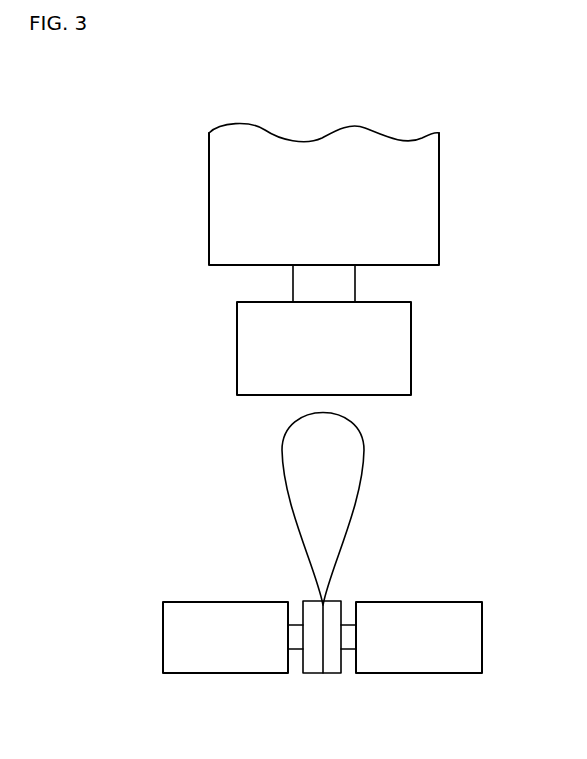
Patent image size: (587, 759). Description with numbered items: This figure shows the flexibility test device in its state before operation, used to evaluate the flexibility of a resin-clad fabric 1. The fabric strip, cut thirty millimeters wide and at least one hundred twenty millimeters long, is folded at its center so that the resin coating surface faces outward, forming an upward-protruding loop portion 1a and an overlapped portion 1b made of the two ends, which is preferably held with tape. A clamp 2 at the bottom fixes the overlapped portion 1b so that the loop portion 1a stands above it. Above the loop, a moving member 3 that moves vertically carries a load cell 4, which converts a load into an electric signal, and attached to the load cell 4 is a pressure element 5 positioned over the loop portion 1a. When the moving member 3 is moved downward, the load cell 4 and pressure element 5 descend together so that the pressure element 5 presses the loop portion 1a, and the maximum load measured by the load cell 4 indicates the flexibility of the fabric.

The resin-clad fabric 1 is at (386, 543).
The loop portion 1a is at (355, 513).
The overlapped portion 1b is at (323, 607).
The clamp 2 is at (173, 633).
The moving member 3 is at (408, 243).
The load cell 4 is at (344, 291).
The pressure element 5 is at (396, 349).